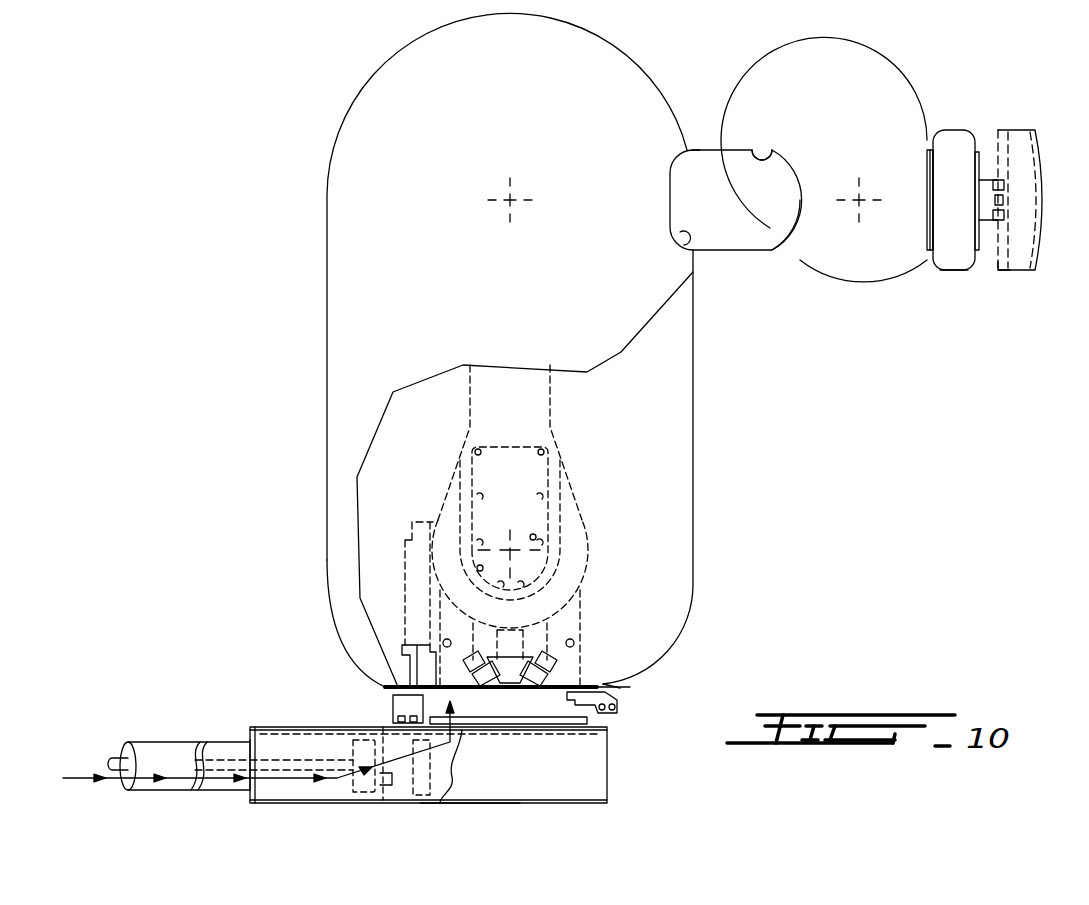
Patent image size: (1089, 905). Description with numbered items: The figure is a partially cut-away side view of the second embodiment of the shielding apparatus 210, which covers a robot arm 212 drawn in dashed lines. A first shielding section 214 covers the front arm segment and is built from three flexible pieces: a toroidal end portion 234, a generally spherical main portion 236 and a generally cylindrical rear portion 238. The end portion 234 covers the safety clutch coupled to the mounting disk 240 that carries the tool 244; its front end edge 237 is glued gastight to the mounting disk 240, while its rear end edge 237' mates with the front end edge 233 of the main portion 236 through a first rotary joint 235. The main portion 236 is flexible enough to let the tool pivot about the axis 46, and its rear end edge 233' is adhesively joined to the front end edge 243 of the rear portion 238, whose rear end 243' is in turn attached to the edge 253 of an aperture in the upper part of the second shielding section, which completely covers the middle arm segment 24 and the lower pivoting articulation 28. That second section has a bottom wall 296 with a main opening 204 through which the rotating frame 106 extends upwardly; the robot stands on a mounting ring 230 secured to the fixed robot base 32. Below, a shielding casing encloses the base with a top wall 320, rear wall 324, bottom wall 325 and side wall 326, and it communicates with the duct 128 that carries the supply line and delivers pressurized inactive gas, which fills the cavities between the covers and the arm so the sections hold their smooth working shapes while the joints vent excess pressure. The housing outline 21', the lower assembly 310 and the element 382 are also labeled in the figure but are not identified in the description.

The housing 21' is at (511, 350).
The shielding apparatus 210 is at (298, 224).
The robot arm 212 is at (456, 435).
The first shielding section 214 is at (709, 140).
The front end edge of main portion 233 is at (908, 158).
The rear end edge of main portion 233' is at (765, 120).
The end portion 234 is at (956, 270).
The first rotary joint 235 is at (929, 250).
The main portion 236 is at (836, 113).
The front end edge of end portion 237 is at (983, 156).
The rear end edge of end portion 237' is at (953, 142).
The rear portion 238 is at (731, 202).
The mounting disk 240 is at (982, 150).
The front end edge of rear portion 243 is at (783, 263).
The rear end of rear portion 243' is at (650, 137).
The tool 244 is at (1002, 254).
The aperture edge 253 is at (688, 240).
The axis 46 is at (859, 205).
The middle arm segment 24 is at (528, 410).
The lower pivoting articulation 28 is at (405, 548).
The rotating frame 106 is at (425, 617).
The main opening 204 is at (572, 690).
The mounting ring 230 is at (543, 702).
The bottom wall 296 is at (408, 695).
The platform 310 is at (615, 790).
The top wall 320 is at (597, 727).
The fixed robot base 32 is at (588, 763).
The rear wall 324 is at (247, 730).
The bottom wall of shielding casing 325 is at (480, 805).
The side wall 326 is at (542, 783).
The duct 128 is at (148, 750).
The rod 382 is at (207, 780).